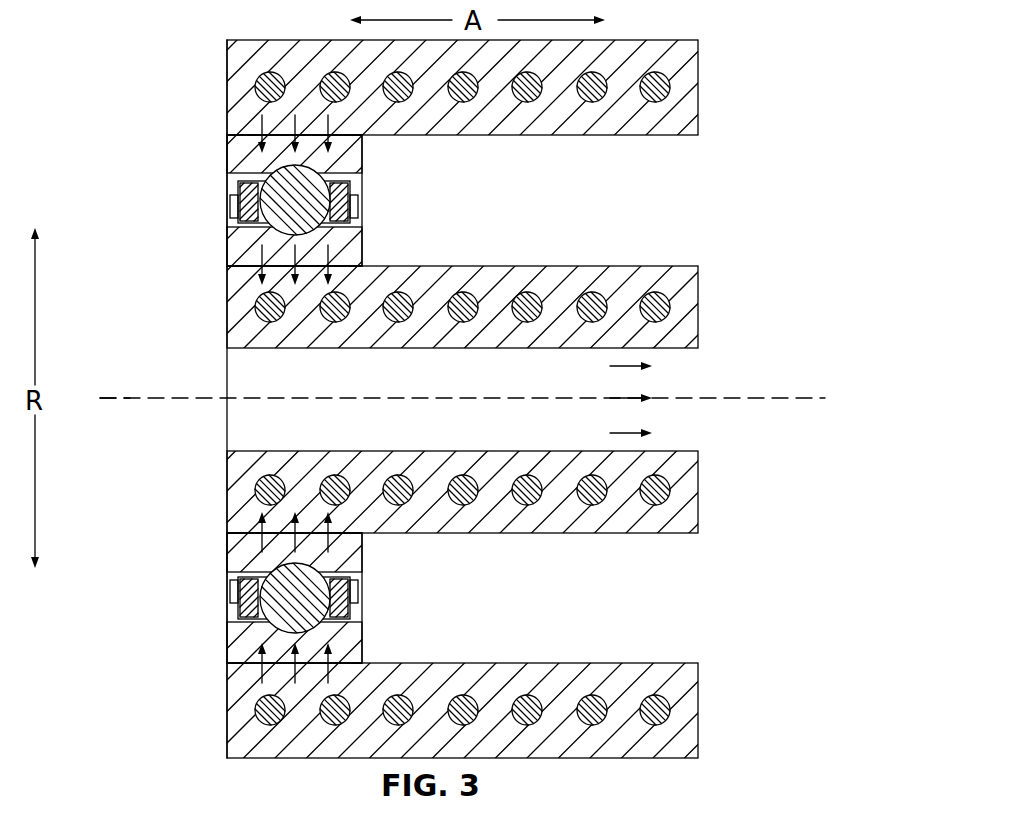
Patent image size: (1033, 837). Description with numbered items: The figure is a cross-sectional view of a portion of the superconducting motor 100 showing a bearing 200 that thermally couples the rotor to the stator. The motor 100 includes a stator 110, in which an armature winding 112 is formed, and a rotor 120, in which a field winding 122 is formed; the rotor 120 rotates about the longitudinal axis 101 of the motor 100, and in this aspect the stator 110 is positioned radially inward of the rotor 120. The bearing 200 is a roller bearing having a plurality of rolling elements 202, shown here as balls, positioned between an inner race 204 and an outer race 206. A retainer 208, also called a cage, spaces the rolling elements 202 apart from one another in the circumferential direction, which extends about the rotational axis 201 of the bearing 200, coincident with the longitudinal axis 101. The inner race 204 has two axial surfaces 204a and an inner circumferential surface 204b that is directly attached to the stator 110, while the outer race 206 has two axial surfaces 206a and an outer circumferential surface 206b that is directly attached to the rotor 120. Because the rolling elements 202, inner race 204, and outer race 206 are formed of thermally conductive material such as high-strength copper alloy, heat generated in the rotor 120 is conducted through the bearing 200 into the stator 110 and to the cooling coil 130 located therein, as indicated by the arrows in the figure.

The motor 100 is at (774, 16).
The longitudinal axis 101 is at (805, 398).
The stator 110 is at (688, 304).
The armature winding 112 is at (655, 307).
The rotor 120 is at (688, 62).
The field winding 122 is at (655, 87).
The cooling coil 130 is at (660, 388).
The bearing 200 is at (140, 178).
The rotational axis 201 is at (125, 398).
The rolling element 202 is at (238, 236).
The inner race 204 is at (365, 228).
The axial surface of inner race 204a is at (370, 261).
The inner circumferential surface 204b is at (283, 279).
The outer race 206 is at (365, 175).
The axial surface of outer race 206a is at (370, 142).
The outer circumferential surface 206b is at (313, 122).
The retainer 208 is at (278, 202).